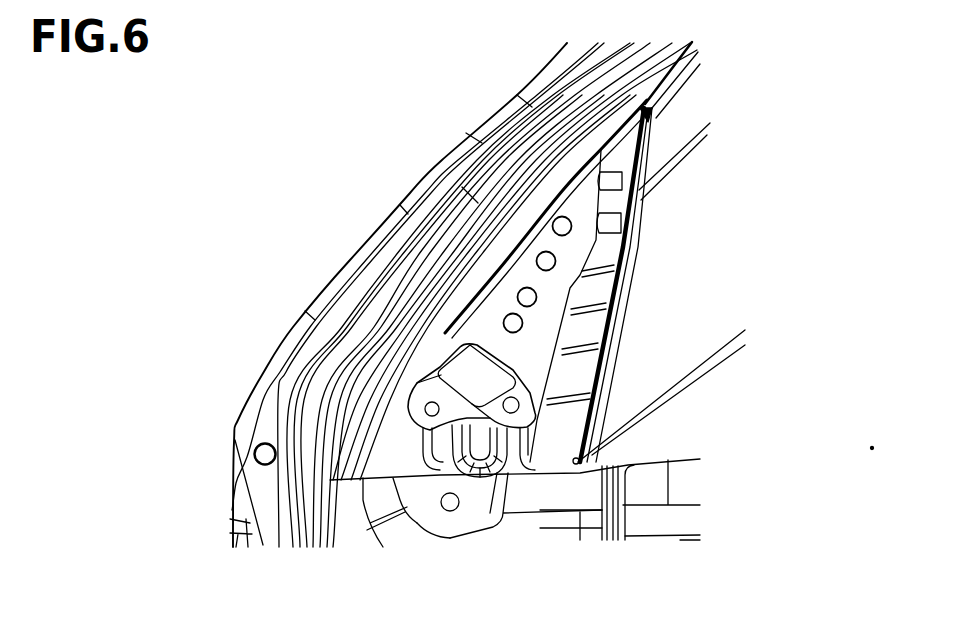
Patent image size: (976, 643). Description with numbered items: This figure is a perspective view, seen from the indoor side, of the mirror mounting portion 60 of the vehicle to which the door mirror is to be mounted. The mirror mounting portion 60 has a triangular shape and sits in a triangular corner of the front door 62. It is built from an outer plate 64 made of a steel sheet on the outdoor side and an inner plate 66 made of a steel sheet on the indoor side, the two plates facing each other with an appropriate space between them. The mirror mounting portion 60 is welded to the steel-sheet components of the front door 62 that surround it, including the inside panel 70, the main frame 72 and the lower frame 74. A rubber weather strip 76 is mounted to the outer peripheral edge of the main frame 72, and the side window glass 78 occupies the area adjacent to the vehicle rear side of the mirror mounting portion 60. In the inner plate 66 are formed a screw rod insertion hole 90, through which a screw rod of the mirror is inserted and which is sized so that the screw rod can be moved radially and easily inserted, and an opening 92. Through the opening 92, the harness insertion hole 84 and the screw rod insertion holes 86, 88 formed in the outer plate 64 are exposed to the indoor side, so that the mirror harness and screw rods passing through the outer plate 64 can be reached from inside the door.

The front door 62 is at (323, 146).
The rubber weather strip 76 is at (468, 139).
The main frame 72 is at (645, 88).
The lower frame 74 is at (600, 243).
The screw rod insertion hole 90 is at (556, 264).
The inner plate 66 is at (548, 303).
The mirror mounting portion 60 is at (552, 330).
The side window glass 78 is at (630, 365).
The harness insertion hole 84 is at (440, 391).
The opening 92 is at (535, 425).
The screw rod insertion hole 88 is at (515, 412).
The screw rod insertion hole 86 is at (432, 416).
The inside panel 70 is at (460, 513).
The outer plate 64 is at (486, 413).